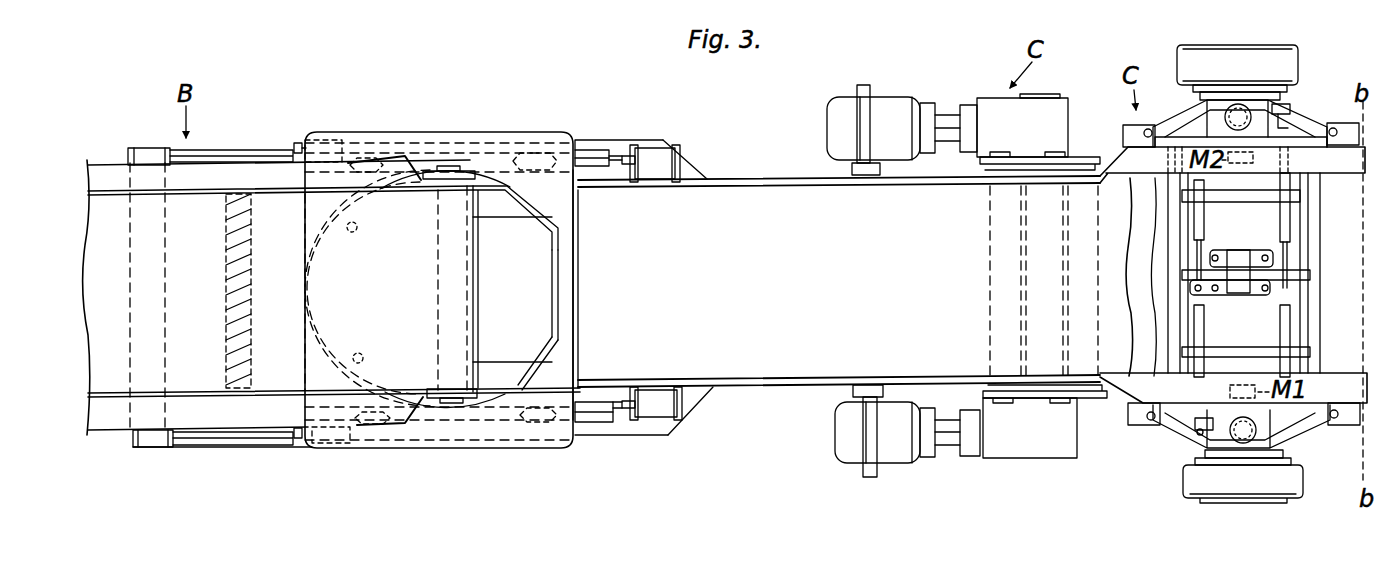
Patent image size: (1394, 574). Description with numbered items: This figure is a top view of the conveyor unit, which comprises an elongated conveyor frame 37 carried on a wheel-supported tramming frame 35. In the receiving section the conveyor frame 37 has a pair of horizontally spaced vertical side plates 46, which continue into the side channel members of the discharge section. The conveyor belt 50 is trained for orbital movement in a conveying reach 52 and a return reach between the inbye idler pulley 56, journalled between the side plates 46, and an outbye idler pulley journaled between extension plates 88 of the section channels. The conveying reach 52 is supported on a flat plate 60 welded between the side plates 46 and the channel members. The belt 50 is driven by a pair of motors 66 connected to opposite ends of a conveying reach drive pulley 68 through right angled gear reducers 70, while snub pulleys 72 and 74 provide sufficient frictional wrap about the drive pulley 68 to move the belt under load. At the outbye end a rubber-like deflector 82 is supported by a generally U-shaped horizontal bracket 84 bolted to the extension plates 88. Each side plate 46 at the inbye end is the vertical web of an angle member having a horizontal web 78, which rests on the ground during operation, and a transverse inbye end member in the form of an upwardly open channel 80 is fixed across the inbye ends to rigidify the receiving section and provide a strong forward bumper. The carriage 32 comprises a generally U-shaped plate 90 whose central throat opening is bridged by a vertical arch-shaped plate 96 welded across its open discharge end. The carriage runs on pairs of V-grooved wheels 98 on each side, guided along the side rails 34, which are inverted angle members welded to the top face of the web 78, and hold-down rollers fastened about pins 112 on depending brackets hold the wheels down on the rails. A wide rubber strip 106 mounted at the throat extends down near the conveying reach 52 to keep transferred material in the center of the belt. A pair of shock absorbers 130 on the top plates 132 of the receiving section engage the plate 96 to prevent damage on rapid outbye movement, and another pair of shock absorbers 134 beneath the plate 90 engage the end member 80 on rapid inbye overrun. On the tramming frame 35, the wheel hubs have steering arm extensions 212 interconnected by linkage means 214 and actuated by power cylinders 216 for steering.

The carriage 32 is at (511, 126).
The side rails 34 is at (244, 158).
The tramming frame 35 is at (1169, 110).
The conveyor frame 37 is at (1111, 148).
The side plates 46 is at (778, 179).
The conveyor belt 50 is at (856, 289).
The conveying reach 52 is at (1086, 217).
The inbye idler pulley 56 is at (228, 270).
The flat plate 60 is at (1135, 237).
The motors 66 is at (887, 104).
The conveying reach drive pulley 68 is at (1020, 323).
The right angled gear reducers 70 is at (1040, 140).
The snub pulley 72 is at (990, 273).
The snub pulley 74 is at (1098, 334).
The horizontal web 78 is at (632, 140).
The transverse inbye end member 80 is at (175, 448).
The deflector 82 is at (540, 222).
The U-shaped horizontal bracket 84 is at (566, 318).
The extension plates 88 is at (472, 172).
The U-shaped plate 90 is at (420, 134).
The arch-shaped plate 96 is at (578, 249).
The V-grooved wheels 98 is at (362, 156).
The rubber strip 106 is at (508, 366).
The pin 112 is at (694, 416).
The shock absorbers 130 is at (655, 158).
The top plates 132 is at (686, 170).
The shock absorbers 134 is at (322, 138).
The steering arm extensions 212 is at (1290, 108).
The linkage means 214 is at (1272, 250).
The power cylinders 216 is at (1199, 214).